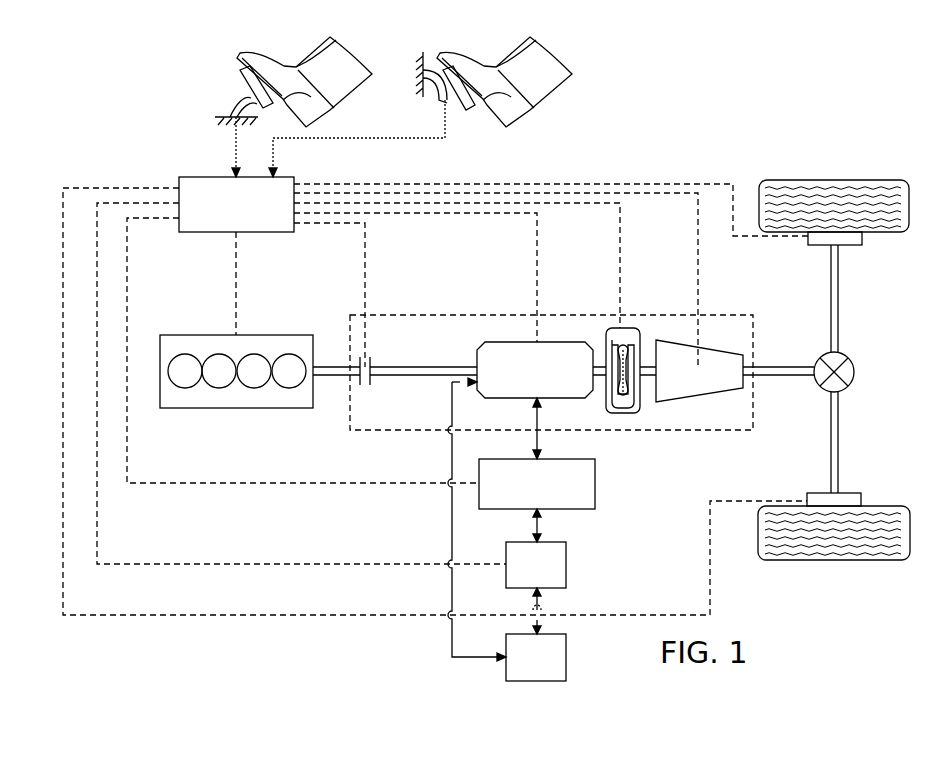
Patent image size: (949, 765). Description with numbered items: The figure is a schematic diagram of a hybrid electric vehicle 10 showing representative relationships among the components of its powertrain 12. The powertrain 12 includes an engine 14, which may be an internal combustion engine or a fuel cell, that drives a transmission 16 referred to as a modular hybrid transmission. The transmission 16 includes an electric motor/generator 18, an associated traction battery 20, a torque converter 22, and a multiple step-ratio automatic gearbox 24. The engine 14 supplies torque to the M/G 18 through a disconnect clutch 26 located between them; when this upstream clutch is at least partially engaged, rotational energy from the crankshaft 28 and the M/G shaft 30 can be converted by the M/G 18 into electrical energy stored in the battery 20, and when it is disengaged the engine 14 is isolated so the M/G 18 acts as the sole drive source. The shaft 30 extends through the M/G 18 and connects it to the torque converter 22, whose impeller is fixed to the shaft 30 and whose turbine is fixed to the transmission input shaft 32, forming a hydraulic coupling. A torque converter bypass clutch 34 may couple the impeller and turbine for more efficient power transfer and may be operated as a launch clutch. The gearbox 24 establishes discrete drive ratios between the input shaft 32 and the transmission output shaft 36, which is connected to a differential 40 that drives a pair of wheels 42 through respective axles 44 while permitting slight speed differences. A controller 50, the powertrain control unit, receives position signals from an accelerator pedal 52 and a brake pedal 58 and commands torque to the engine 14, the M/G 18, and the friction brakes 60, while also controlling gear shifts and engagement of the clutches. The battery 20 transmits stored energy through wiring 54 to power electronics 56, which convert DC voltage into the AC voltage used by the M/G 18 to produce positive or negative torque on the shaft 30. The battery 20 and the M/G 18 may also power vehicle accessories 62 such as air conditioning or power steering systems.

The hybrid electric vehicle 10 is at (617, 118).
The powertrain 12 is at (300, 504).
The engine 14 is at (200, 335).
The transmission 16 is at (590, 315).
The electric motor/generator 18 is at (512, 342).
The traction battery 20 is at (566, 565).
The torque converter 22 is at (623, 413).
The gearbox 24 is at (700, 397).
The disconnect clutch 26 is at (373, 359).
The crankshaft 28 is at (338, 366).
The M/G shaft 30 is at (441, 366).
The transmission input shaft 32 is at (650, 366).
The torque converter bypass clutch 34 is at (625, 330).
The transmission output shaft 36 is at (772, 366).
The differential 40 is at (855, 370).
The wheels 42 is at (835, 180).
The axles 44 is at (842, 292).
The controller 50 is at (212, 177).
The accelerator pedal 52 is at (242, 80).
The wiring 54 is at (530, 528).
The power electronics 56 is at (595, 487).
The brake pedal 58 is at (484, 108).
The friction brakes 60 is at (862, 240).
The vehicle accessories 62 is at (566, 657).